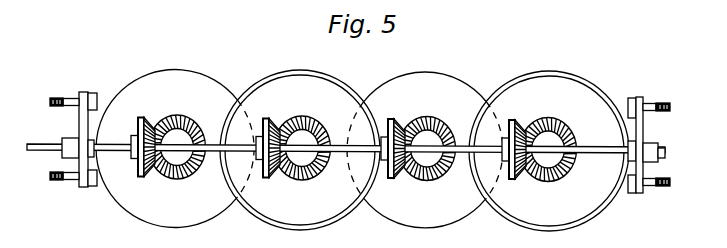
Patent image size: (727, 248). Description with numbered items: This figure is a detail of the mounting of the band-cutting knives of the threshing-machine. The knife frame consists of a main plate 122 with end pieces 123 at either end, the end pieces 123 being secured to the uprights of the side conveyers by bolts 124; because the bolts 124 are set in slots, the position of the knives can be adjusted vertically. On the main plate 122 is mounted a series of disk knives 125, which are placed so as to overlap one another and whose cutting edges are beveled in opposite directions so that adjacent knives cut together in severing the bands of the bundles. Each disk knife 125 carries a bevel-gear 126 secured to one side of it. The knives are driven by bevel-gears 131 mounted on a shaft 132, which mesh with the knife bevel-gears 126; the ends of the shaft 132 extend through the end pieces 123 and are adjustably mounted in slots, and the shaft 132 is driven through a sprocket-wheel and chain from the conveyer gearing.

The main plate 122 is at (96, 179).
The end pieces 123 is at (83, 124).
The bolts 124 is at (660, 103).
The disk knives 125 is at (175, 148).
The bevel-gear 126 is at (438, 181).
The bevel-gears 131 is at (268, 177).
The shaft 132 is at (592, 152).